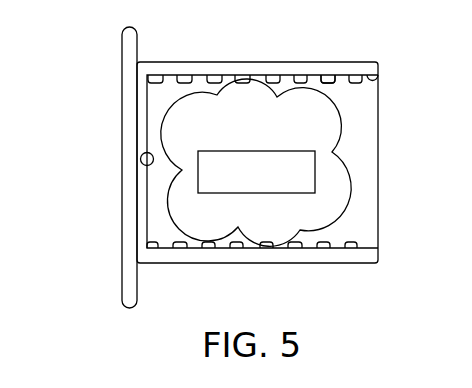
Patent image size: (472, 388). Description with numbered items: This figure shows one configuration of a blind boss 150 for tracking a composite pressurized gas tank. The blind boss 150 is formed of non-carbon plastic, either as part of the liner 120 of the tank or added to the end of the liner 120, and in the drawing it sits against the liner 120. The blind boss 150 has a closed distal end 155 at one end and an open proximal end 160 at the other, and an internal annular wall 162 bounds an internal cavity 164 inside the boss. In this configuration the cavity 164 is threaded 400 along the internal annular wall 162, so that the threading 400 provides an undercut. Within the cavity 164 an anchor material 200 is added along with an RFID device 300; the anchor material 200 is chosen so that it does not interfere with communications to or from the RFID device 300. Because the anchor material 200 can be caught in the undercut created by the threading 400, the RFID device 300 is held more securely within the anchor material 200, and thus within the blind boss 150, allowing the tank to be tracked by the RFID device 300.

The liner 120 is at (128, 50).
The blind boss 150 is at (257, 50).
The closed distal end 155 is at (141, 153).
The open proximal end 160 is at (388, 172).
The internal annular wall 162 is at (380, 87).
The internal cavity 164 is at (368, 236).
The anchor material 200 is at (313, 136).
The RFID device 300 is at (242, 186).
The threading 400 is at (330, 84).